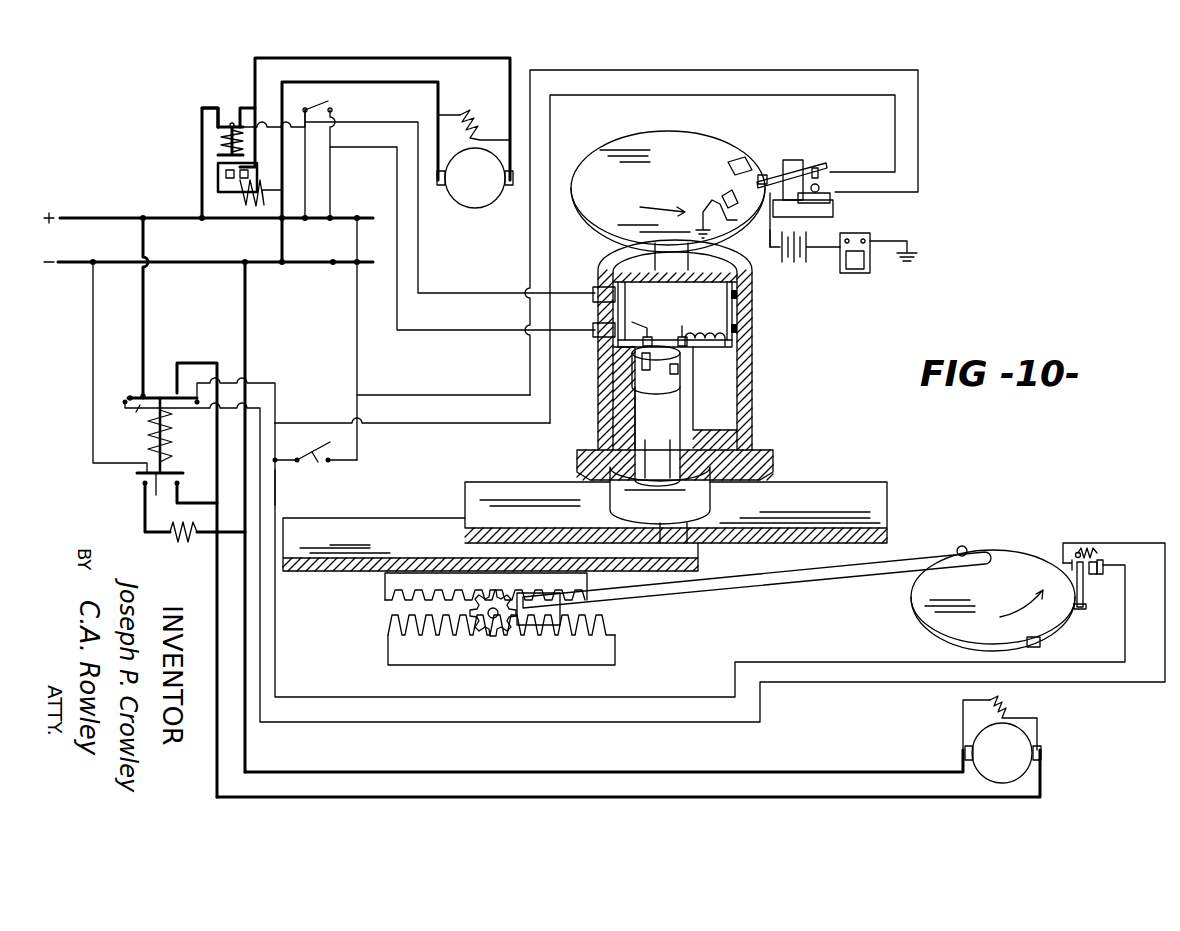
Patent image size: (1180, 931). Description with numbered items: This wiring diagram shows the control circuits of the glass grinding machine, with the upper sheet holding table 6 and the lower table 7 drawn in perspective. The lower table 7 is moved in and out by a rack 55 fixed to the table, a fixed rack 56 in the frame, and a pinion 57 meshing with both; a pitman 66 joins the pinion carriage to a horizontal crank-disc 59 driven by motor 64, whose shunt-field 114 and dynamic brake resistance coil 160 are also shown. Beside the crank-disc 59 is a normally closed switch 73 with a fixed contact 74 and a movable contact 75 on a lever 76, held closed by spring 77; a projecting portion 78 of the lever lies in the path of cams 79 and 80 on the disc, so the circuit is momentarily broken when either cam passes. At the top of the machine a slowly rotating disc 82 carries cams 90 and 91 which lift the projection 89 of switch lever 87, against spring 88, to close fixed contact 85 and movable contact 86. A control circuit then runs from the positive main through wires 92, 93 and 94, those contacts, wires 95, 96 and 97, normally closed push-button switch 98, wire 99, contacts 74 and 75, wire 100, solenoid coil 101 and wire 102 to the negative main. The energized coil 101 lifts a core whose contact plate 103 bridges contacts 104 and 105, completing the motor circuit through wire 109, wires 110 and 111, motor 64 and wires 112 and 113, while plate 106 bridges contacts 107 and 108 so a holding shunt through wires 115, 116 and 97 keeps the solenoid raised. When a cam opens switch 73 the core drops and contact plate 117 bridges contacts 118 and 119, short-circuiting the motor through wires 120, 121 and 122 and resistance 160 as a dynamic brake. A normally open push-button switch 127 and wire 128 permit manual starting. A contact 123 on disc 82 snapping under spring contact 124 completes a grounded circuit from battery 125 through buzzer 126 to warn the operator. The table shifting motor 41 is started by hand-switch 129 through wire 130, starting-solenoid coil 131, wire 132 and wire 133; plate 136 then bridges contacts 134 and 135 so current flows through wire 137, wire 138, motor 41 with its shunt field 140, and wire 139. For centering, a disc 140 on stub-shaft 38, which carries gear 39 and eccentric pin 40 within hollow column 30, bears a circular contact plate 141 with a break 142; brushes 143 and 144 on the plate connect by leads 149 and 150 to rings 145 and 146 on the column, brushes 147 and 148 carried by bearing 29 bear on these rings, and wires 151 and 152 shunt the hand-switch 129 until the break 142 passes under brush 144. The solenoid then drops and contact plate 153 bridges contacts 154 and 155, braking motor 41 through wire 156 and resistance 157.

The upper sheet holding table 6 is at (825, 492).
The lower sheet holding table 7 is at (360, 512).
The journal-bearing 29 is at (746, 380).
The hollow column 30 is at (746, 403).
The stub-shaft 38 is at (656, 428).
The gear 39 is at (291, 185).
The eccentric driving pin 40 is at (700, 532).
The motor 41 is at (482, 196).
The rack 55 is at (386, 578).
The fixed rack 56 is at (410, 651).
The pinion 57 is at (470, 613).
The crank-disc 59 is at (1030, 565).
The motor 64 is at (1012, 755).
The pitman 66 is at (880, 563).
The normally closed switch 73 is at (1088, 574).
The fixed contact point 74 is at (1100, 558).
The movable contact 75 is at (1076, 552).
The lever 76 is at (1083, 596).
The spring 77 is at (1087, 547).
The projecting portion 78 is at (1080, 612).
The cam 79 is at (1040, 643).
The cam 80 is at (963, 547).
The disc 82 is at (610, 157).
The fixed contact 85 is at (820, 186).
The movable contact 86 is at (819, 172).
The switch lever 87 is at (797, 163).
The spring 88 is at (768, 220).
The projection 89 is at (769, 163).
The cam 90 is at (742, 160).
The cam 91 is at (768, 248).
The wire 92 is at (357, 299).
The wire 93 is at (432, 395).
The wire 94 is at (790, 70).
The wire 95 is at (745, 95).
The wire 96 is at (506, 423).
The wire 97 is at (275, 458).
The normally closed push-button switch 98 is at (287, 487).
The wire 99 is at (520, 697).
The wire 100 is at (520, 722).
The solenoid coil 101 is at (170, 424).
The wire 102 is at (93, 368).
The contact plate 103 is at (148, 390).
The contact point 104 is at (146, 392).
The contact point 105 is at (185, 387).
The plate 106 is at (136, 413).
The contact 107 is at (124, 404).
The contact 108 is at (200, 354).
The wire 109 is at (145, 310).
The wire 110 is at (220, 668).
The wire 111 is at (676, 797).
The wire 112 is at (672, 772).
The wire 113 is at (247, 600).
The shunt-field 114 is at (1000, 712).
The wire 115 is at (128, 394).
The wire 116 is at (272, 384).
The contact plate 117 is at (161, 491).
The contact 118 is at (142, 485).
The contact 119 is at (187, 478).
The wire 120 is at (197, 493).
The wire 121 is at (145, 521).
The wire 122 is at (225, 532).
The contact 123 is at (705, 212).
The spring contact 124 is at (726, 196).
The battery 125 is at (811, 257).
The buzzer 126 is at (850, 236).
The manually operated switch 127 is at (315, 462).
The wire 128 is at (360, 445).
The hand-switch 129 is at (322, 106).
The wire 130 is at (306, 196).
The starting-solenoid coil 131 is at (226, 140).
The wire 132 is at (270, 125).
The wire 133 is at (331, 203).
The contact 134 is at (215, 120).
The contact 135 is at (240, 120).
The plate 136 is at (226, 122).
The wire 137 is at (202, 190).
The wire 138 is at (330, 57).
The wire 139 is at (422, 82).
The disc 140 is at (486, 102).
The circular contact plate 141 is at (630, 372).
The break 142 is at (682, 370).
The brush 143 is at (652, 348).
The brush 144 is at (683, 334).
The annular contact ring 145 is at (738, 296).
The annular contact ring 146 is at (738, 328).
The brush 147 is at (593, 294).
The brush 148 is at (593, 330).
The lead 149 is at (646, 335).
The lead 150 is at (675, 314).
The wire 151 is at (455, 294).
The wire 152 is at (522, 330).
The contact plate 153 is at (232, 179).
The contact 154 is at (220, 167).
The contact 155 is at (253, 172).
The wire 156 is at (257, 100).
The resistance 157 is at (240, 198).
The resistance coil 160 is at (188, 542).